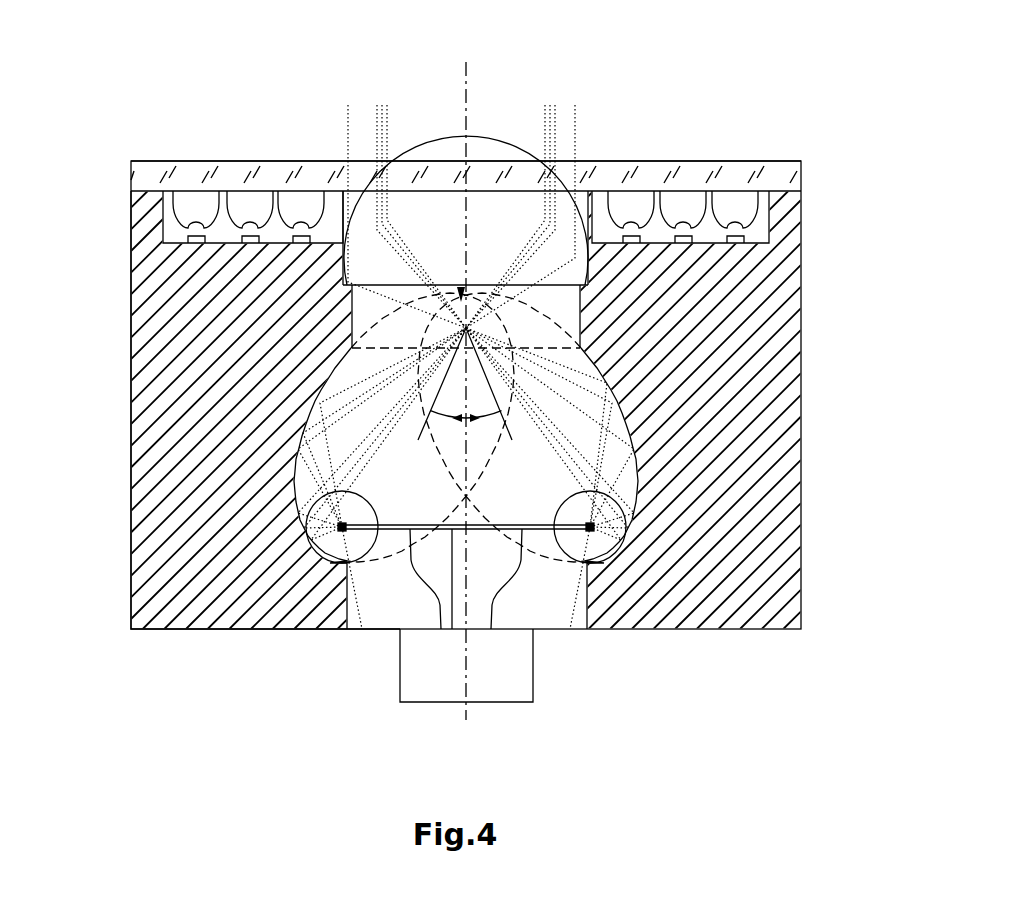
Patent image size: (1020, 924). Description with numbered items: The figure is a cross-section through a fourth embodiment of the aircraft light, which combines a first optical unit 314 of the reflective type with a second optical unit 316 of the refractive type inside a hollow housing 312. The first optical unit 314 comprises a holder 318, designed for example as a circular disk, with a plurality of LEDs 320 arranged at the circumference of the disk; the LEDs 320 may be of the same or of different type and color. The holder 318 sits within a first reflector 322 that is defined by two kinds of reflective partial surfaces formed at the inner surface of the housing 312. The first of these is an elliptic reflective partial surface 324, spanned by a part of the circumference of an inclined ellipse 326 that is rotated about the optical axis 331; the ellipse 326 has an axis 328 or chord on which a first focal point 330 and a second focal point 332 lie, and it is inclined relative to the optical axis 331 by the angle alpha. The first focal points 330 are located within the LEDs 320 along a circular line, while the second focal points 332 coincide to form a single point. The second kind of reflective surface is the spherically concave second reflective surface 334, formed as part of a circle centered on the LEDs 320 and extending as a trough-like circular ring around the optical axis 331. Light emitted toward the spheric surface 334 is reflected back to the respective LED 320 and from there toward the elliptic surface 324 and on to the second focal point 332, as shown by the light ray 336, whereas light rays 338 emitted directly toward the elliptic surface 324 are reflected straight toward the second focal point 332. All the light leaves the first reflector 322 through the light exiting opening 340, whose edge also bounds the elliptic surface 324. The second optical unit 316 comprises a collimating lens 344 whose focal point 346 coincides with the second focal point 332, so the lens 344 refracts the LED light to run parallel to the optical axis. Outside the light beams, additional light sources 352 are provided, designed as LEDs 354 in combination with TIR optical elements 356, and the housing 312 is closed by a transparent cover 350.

The hollow housing 312 is at (187, 393).
The first optical unit 314 is at (680, 424).
The second optical unit 316 is at (623, 117).
The holder 318 is at (452, 630).
The LEDs 320 is at (466, 428).
The first reflector 322 is at (608, 388).
The elliptic reflective partial surface 324 is at (305, 421).
The ellipse 326 is at (366, 300).
The axis 328 is at (385, 447).
The first focal point 330 is at (340, 568).
The optical axis 331 is at (465, 94).
The second focal point 332 is at (454, 398).
The second reflective surface 334 is at (352, 592).
The light ray 336 is at (357, 608).
The light rays 338 is at (575, 267).
The light exiting opening 340 is at (536, 255).
The collimating lens 344 is at (500, 230).
The focal point 346 is at (459, 292).
The transparent cover 350 is at (662, 172).
The additional light sources 352 is at (242, 125).
The LEDs 354 is at (186, 241).
The TIR optical elements 356 is at (195, 205).